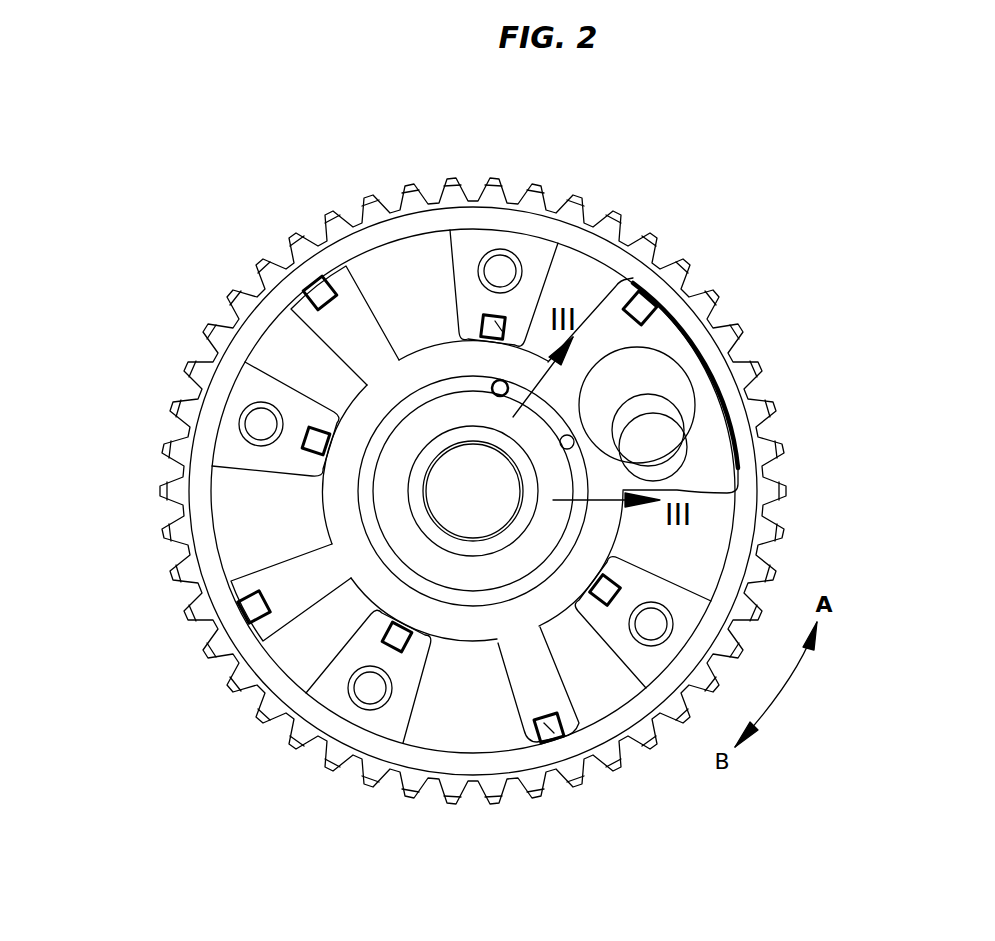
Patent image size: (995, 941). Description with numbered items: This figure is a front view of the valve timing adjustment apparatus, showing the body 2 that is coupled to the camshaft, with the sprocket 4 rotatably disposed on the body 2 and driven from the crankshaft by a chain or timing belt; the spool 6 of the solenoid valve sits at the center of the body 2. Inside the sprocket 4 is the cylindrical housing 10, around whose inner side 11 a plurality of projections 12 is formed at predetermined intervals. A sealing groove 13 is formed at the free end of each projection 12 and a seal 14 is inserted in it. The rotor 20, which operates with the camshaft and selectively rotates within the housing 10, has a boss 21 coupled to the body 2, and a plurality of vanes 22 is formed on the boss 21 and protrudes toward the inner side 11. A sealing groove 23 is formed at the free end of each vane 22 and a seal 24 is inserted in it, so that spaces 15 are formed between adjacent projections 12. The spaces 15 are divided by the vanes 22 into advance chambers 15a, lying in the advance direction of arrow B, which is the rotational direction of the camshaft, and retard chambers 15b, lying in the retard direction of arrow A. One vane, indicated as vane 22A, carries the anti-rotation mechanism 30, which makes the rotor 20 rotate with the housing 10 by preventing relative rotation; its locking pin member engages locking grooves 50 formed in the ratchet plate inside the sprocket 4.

The body 2 is at (398, 452).
The sprocket 4 is at (335, 220).
The spool 6 is at (445, 505).
The housing 10 is at (275, 279).
The inner side 11 is at (470, 256).
The projections 12 is at (498, 330).
The sealing groove 13 is at (503, 322).
The seal 14 is at (513, 408).
The spaces 15 is at (371, 424).
The advance chambers 15a is at (228, 522).
The retard chambers 15b is at (302, 647).
The rotor 20 is at (473, 542).
The boss 21 is at (455, 625).
The vanes 22 is at (518, 703).
The vane having the anti-rotation mechanism 22A is at (712, 440).
The sealing groove 23 is at (558, 742).
The seal 24 is at (542, 743).
The anti-rotation mechanism 30 is at (700, 366).
The locking grooves 50 is at (650, 392).